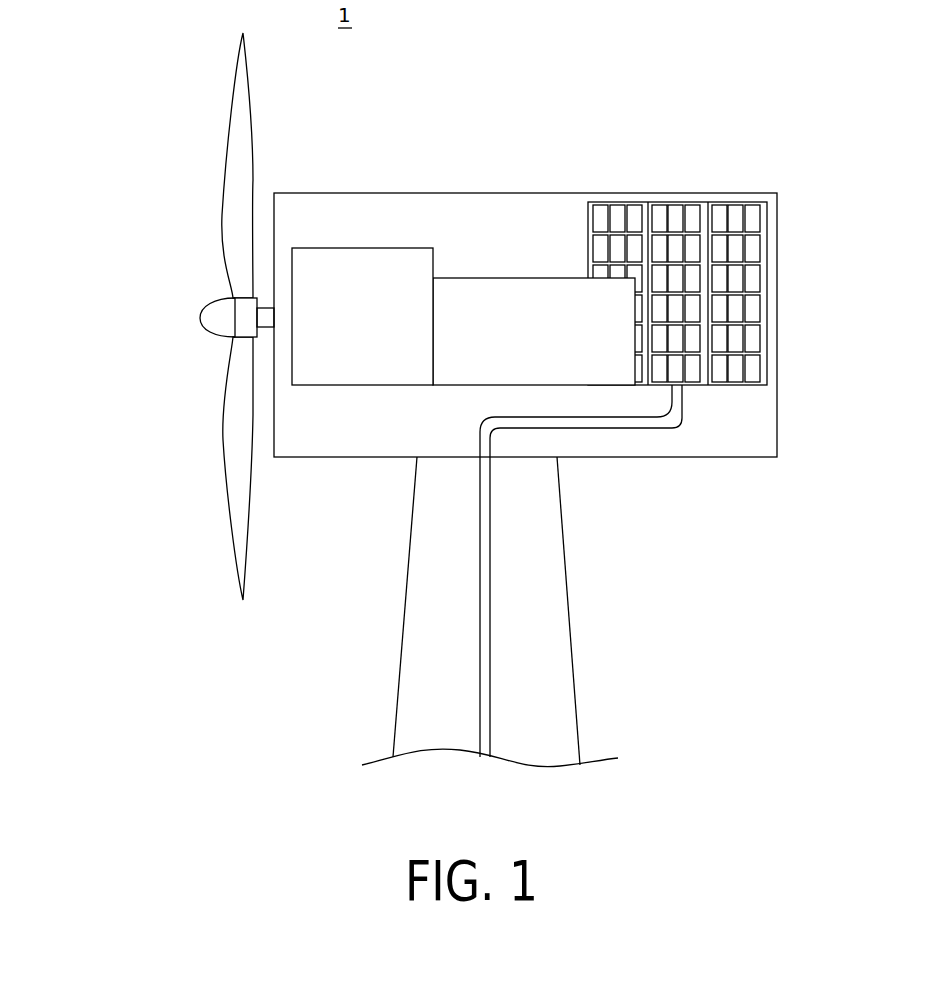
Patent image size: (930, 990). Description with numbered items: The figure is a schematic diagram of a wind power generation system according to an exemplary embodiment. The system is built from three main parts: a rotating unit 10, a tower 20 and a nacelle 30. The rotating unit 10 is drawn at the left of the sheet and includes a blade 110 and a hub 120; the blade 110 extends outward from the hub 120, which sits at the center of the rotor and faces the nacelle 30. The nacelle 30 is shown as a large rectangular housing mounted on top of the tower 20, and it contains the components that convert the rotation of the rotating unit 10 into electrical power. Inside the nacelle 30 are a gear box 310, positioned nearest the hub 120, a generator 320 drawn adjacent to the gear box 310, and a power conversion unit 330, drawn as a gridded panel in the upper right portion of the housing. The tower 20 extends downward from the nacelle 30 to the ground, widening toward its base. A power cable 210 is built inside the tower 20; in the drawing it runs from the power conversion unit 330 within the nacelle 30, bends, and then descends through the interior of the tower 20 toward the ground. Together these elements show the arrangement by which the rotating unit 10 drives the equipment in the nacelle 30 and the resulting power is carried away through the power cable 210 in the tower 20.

The rotating unit 10 is at (170, 316).
The blade 110 is at (230, 247).
The hub 120 is at (221, 308).
The tower 20 is at (393, 642).
The power cable 210 is at (490, 623).
The nacelle 30 is at (375, 193).
The gear box 310 is at (409, 248).
The generator 320 is at (516, 278).
The power conversion unit 330 is at (665, 201).